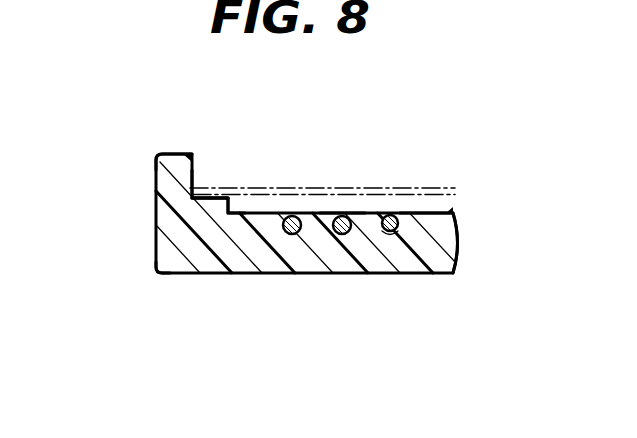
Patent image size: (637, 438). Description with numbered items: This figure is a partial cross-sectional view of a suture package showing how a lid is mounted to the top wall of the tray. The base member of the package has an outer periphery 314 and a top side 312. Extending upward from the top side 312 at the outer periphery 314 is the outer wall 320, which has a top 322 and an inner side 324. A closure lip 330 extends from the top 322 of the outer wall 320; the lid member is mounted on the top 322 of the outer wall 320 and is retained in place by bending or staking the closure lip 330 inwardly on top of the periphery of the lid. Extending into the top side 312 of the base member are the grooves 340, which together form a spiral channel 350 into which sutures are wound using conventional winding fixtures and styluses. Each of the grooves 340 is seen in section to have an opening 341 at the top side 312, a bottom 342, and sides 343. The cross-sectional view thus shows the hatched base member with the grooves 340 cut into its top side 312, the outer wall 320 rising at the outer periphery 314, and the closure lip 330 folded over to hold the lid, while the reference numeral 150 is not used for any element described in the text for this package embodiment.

The top side 312 is at (454, 213).
The outer periphery 314 is at (162, 272).
The outer wall 320 is at (210, 205).
The top 322 is at (200, 192).
The inner side 324 is at (232, 208).
The closure lip 330 is at (176, 162).
The grooves 340 is at (405, 223).
The openings 341 is at (349, 218).
The bottoms 342 is at (391, 240).
The sides 343 is at (399, 213).
The spiral channel 350 is at (344, 212).
The O-ring 150 is at (298, 234).